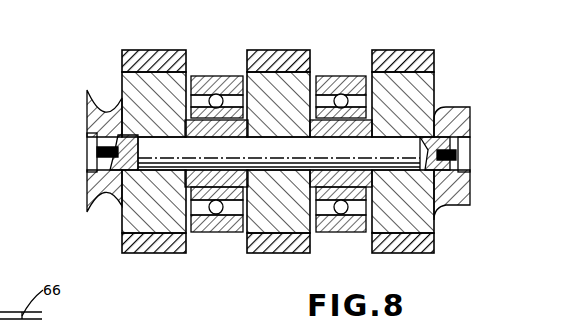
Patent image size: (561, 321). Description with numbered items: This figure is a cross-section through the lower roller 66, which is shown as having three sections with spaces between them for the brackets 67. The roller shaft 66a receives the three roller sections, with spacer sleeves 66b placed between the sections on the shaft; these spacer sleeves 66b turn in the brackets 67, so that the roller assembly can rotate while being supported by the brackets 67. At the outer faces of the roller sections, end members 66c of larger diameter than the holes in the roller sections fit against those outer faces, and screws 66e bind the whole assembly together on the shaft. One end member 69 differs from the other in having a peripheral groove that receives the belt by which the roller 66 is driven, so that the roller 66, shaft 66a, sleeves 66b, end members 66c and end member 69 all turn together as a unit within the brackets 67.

The lower roller 66 is at (137, 82).
The roller shaft 66a is at (385, 142).
The spacer sleeves 66b is at (317, 175).
The end members 66c is at (92, 188).
The screws 66e is at (92, 145).
The brackets 67 is at (212, 232).
The end member 69 is at (95, 115).